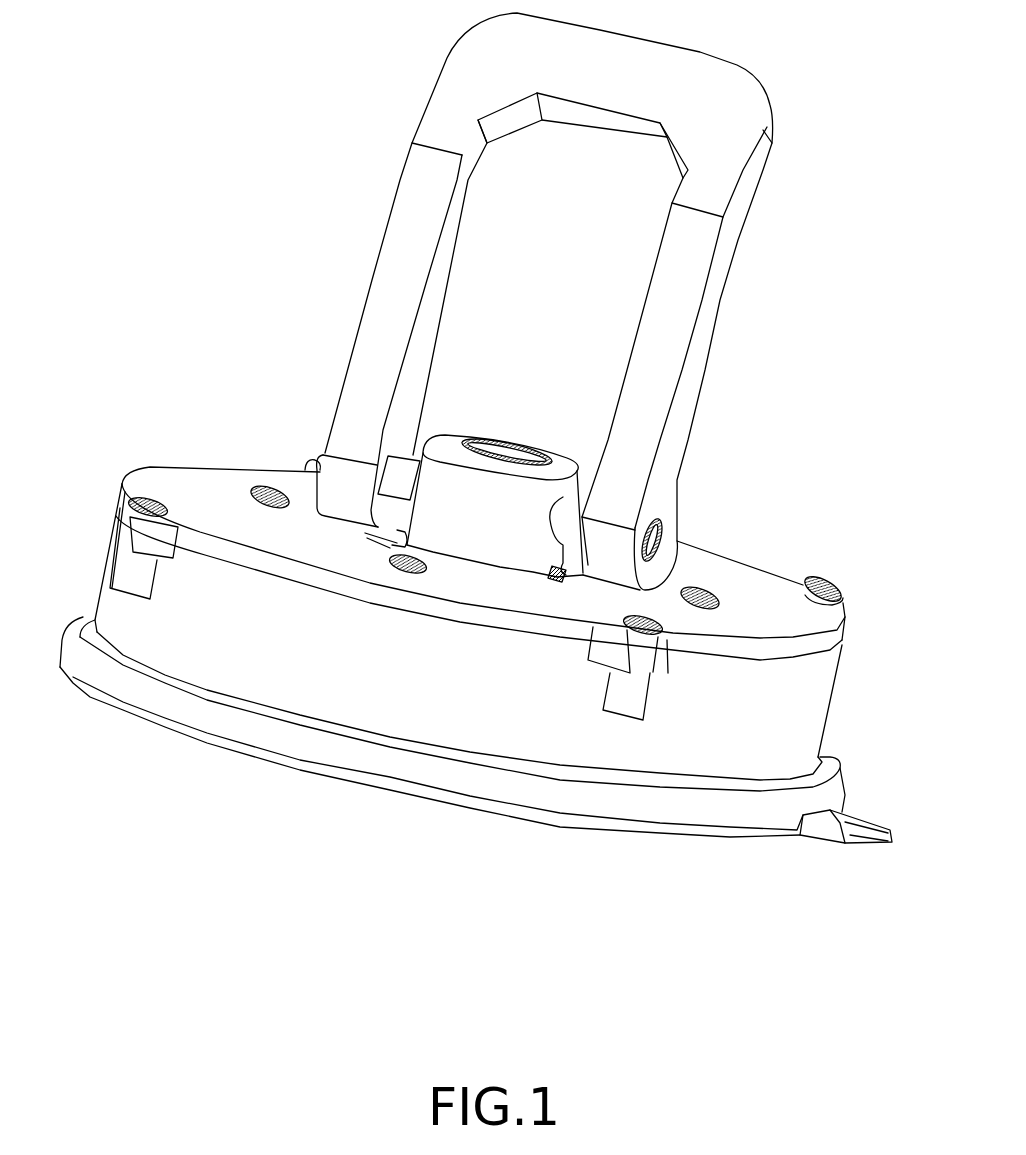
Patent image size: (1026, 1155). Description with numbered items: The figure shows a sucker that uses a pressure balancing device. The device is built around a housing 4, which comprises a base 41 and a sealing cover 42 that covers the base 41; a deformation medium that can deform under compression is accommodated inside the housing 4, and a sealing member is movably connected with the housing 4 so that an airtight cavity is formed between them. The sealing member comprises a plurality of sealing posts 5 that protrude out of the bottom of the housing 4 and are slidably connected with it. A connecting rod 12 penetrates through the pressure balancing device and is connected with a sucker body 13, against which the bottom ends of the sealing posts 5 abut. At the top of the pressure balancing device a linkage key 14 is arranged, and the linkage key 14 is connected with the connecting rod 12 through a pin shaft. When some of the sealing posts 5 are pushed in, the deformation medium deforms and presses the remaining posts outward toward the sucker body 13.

The housing 4 is at (440, 694).
The sealing posts 5 is at (490, 757).
The connecting rod 12 is at (477, 523).
The sucker body 13 is at (317, 750).
The linkage key 14 is at (668, 292).
The base 41 is at (278, 630).
The sealing cover 42 is at (230, 552).